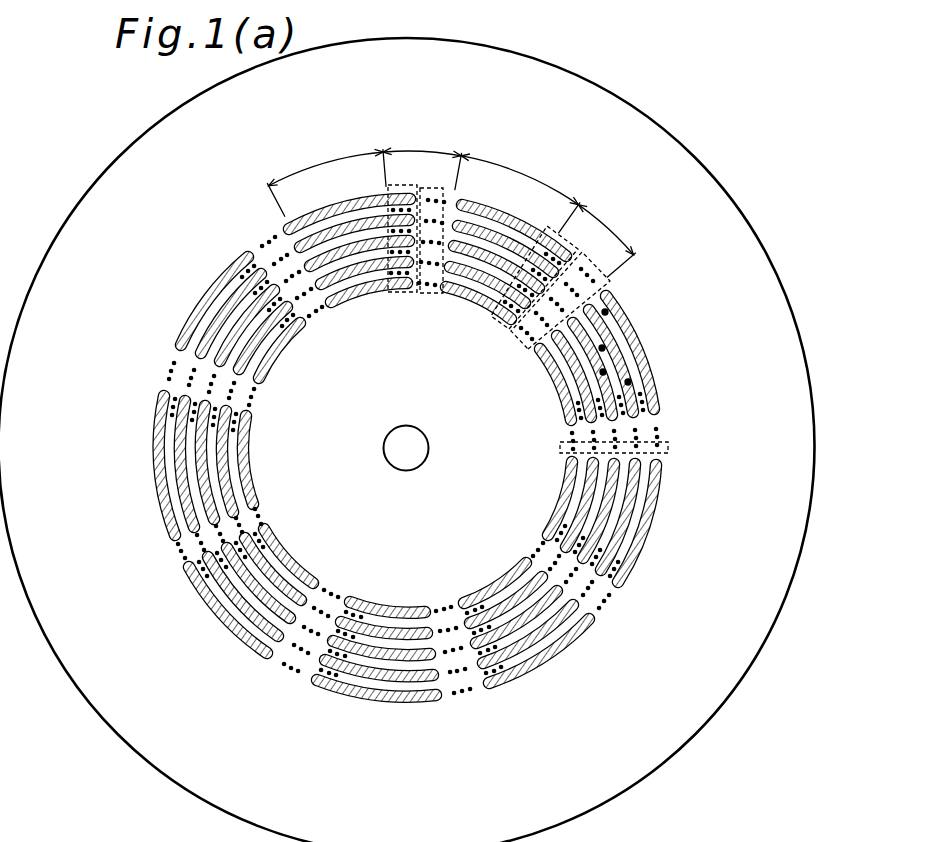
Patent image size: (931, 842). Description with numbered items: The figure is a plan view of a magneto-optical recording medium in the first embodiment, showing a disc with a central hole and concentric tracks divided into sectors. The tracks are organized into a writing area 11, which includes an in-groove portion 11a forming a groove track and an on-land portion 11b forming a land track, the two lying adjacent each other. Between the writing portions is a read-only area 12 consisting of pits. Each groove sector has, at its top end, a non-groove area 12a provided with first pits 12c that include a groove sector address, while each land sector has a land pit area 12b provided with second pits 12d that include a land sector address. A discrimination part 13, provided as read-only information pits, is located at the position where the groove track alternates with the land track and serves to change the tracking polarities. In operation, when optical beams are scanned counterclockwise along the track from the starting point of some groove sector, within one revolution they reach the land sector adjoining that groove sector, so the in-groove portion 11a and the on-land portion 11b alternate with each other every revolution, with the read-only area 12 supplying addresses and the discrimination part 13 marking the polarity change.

The writing area 11 is at (312, 160).
The in-groove portion 11a is at (602, 348).
The on-land portion 11b is at (628, 382).
The read-only area 12 is at (421, 144).
The non-groove area 12a is at (425, 302).
The land pit area 12b is at (404, 302).
The first pits 12c is at (293, 674).
The second pits 12d is at (336, 684).
The discrimination part 13 is at (673, 438).